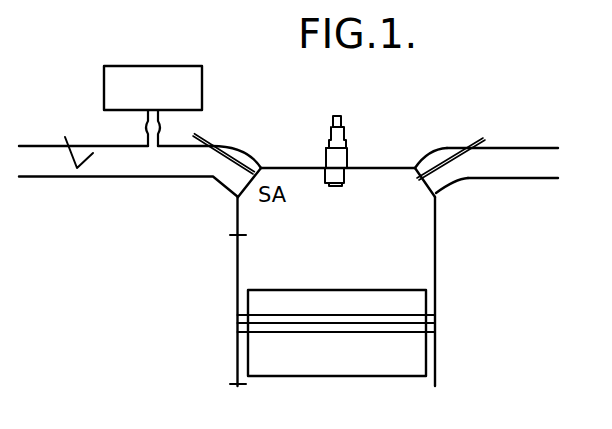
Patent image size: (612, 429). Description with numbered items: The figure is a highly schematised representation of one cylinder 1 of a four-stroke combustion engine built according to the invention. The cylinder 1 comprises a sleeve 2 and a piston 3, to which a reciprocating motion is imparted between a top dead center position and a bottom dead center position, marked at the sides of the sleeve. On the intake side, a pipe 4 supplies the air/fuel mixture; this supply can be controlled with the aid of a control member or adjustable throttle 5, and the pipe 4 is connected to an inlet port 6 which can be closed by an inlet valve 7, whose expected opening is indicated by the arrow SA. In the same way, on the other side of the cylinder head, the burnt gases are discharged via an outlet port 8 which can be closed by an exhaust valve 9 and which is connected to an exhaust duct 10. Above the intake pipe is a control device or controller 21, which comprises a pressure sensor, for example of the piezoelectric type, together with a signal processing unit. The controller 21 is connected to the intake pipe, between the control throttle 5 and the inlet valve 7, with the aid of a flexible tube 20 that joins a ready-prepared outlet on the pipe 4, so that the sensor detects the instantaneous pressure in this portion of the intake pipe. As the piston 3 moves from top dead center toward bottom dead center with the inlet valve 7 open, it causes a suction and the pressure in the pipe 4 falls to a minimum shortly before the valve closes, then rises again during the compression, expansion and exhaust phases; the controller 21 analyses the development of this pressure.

The cylinder 1 is at (224, 251).
The sleeve 2 is at (437, 245).
The piston 3 is at (334, 301).
The pipe 4 is at (120, 179).
The adjustable throttle 5 is at (72, 142).
The inlet port 6 is at (238, 190).
The inlet valve 7 is at (259, 165).
The outlet port 8 is at (437, 187).
The exhaust valve 9 is at (421, 166).
The exhaust duct 10 is at (509, 147).
The flexible tube 20 is at (148, 120).
The controller 21 is at (139, 66).